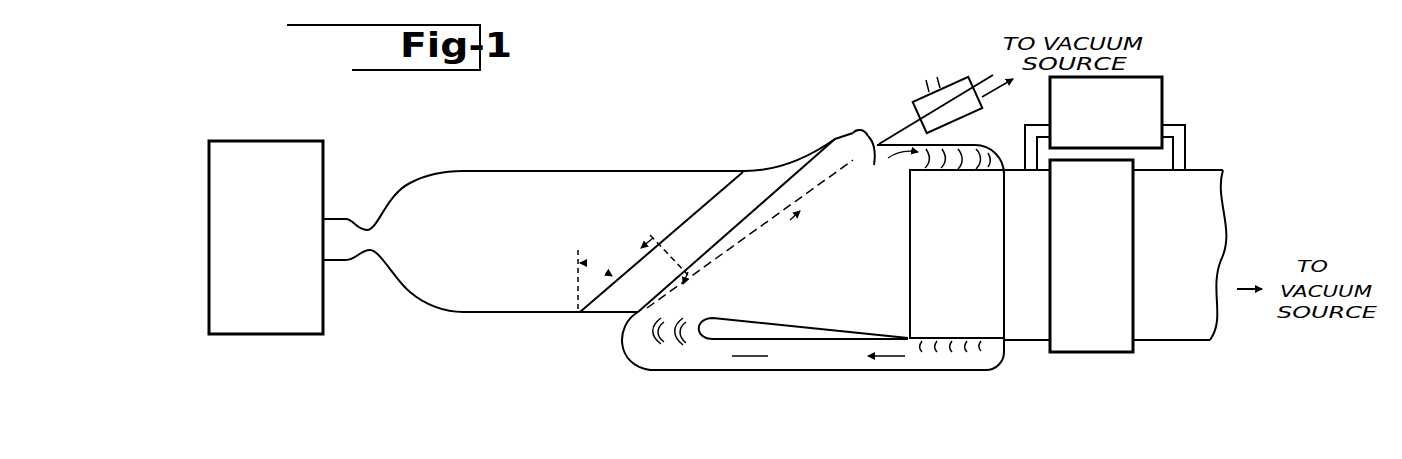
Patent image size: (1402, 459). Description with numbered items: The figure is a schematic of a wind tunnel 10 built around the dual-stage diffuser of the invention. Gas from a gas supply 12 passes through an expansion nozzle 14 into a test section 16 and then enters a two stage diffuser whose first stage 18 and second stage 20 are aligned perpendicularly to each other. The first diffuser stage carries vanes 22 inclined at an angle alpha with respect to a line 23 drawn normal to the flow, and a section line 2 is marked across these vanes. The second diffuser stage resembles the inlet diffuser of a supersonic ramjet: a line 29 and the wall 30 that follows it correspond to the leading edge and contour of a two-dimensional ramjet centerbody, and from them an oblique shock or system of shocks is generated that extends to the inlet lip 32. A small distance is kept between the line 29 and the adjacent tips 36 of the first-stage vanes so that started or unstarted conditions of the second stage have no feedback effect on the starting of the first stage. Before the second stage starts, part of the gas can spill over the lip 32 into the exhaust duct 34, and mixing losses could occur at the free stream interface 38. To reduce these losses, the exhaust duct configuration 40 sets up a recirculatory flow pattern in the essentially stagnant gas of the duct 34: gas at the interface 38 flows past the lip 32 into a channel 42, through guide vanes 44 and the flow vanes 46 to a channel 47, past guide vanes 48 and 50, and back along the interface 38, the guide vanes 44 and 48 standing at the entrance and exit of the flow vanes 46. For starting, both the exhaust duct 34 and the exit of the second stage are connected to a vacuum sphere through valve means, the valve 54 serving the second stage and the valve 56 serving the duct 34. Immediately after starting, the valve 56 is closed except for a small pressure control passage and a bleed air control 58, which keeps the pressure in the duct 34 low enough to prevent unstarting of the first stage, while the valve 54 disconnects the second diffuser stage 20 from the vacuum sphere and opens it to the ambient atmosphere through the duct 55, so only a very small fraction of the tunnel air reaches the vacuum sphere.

The section line 2- 2 is at (674, 254).
The wind tunnel 10 is at (621, 168).
The gas supply 12 is at (273, 140).
The expansion nozzle 14 is at (372, 254).
The test section 16 is at (536, 170).
The first diffuser stage 18 is at (693, 228).
The second diffuser stage 20 is at (896, 121).
The vanes 22 is at (723, 203).
The line normal to the flow 23 is at (578, 288).
The line 29 is at (862, 127).
The wall 30 is at (867, 132).
The inlet lip 32 is at (874, 165).
The exhaust duct 34 is at (889, 295).
The tips of the diffuser vanes 36 is at (838, 139).
The free stream interface 38 is at (743, 247).
The exhaust duct configuration 40 is at (1009, 206).
The channel 42 is at (942, 144).
The guide vanes 44 is at (957, 172).
The flow vanes 46 is at (967, 284).
The channel 47 is at (827, 360).
The guide vanes 48 is at (945, 343).
The guide vanes 50 is at (682, 345).
The valve 54 is at (960, 80).
The duct 55 is at (932, 80).
The valve 56 is at (1080, 353).
The bleed air control 58 is at (1167, 93).